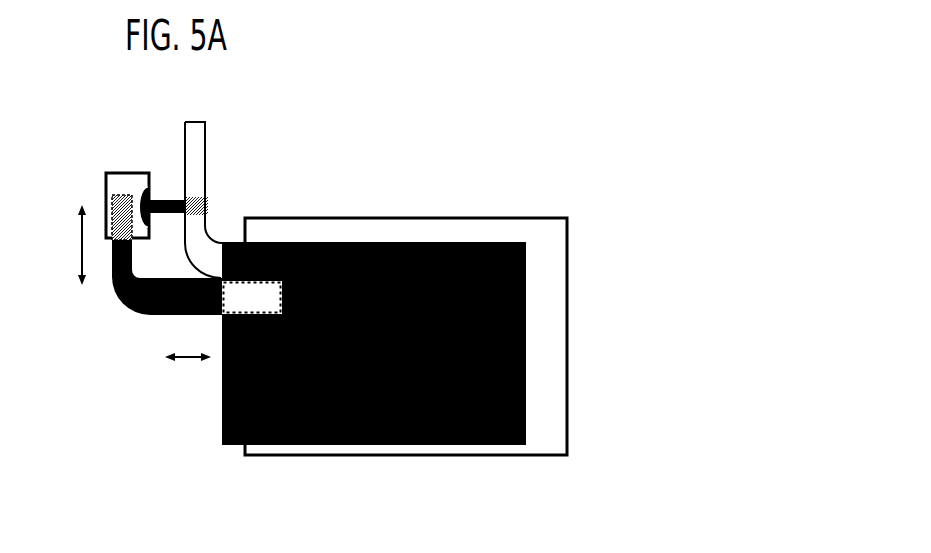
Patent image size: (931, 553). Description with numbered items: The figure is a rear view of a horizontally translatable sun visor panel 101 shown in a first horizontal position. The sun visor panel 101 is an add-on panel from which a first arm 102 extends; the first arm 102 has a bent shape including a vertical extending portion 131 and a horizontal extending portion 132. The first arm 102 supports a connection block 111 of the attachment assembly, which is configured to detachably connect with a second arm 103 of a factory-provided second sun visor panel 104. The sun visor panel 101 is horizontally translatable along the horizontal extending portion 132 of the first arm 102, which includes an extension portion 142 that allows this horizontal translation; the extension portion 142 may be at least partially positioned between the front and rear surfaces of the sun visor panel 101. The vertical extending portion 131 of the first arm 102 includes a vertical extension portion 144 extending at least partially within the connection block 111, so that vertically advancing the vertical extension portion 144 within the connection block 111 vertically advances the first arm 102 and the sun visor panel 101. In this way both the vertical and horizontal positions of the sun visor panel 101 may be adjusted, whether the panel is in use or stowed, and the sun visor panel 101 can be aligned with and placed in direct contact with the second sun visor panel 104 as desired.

The sun visor panel 101 is at (423, 242).
The first arm 102 is at (123, 349).
The second arm 103 is at (195, 158).
The second sun visor panel 104 is at (550, 345).
The connection block 111 is at (120, 172).
The vertical extending portion 131 is at (108, 277).
The horizontal extending portion 132 is at (160, 315).
The extension portion 142 is at (255, 298).
The vertical extension portion 144 is at (130, 222).